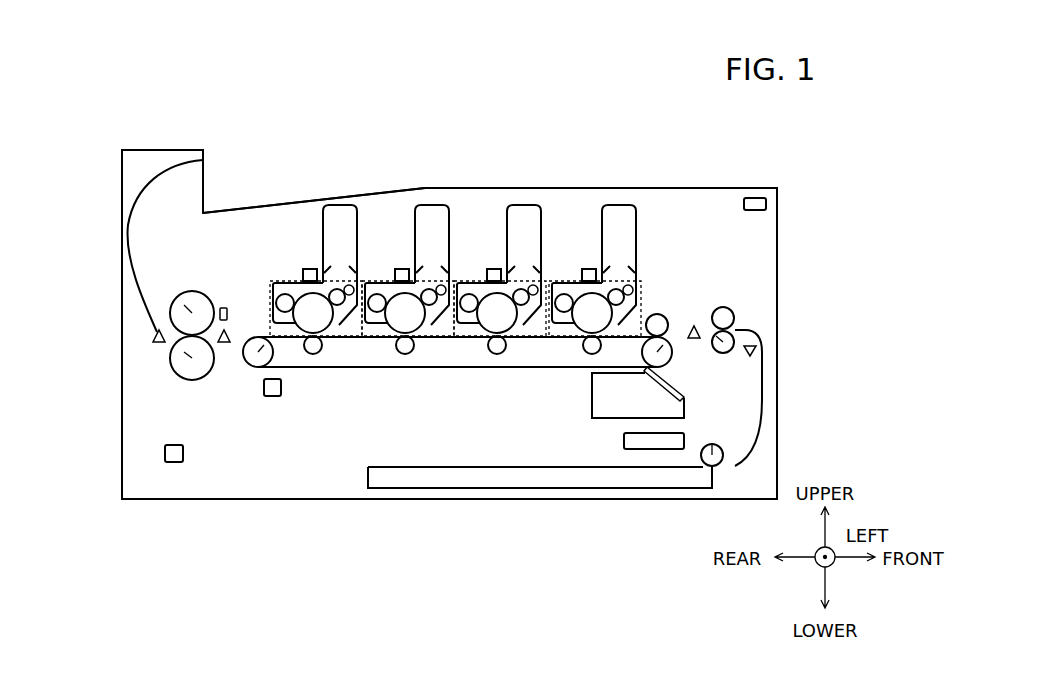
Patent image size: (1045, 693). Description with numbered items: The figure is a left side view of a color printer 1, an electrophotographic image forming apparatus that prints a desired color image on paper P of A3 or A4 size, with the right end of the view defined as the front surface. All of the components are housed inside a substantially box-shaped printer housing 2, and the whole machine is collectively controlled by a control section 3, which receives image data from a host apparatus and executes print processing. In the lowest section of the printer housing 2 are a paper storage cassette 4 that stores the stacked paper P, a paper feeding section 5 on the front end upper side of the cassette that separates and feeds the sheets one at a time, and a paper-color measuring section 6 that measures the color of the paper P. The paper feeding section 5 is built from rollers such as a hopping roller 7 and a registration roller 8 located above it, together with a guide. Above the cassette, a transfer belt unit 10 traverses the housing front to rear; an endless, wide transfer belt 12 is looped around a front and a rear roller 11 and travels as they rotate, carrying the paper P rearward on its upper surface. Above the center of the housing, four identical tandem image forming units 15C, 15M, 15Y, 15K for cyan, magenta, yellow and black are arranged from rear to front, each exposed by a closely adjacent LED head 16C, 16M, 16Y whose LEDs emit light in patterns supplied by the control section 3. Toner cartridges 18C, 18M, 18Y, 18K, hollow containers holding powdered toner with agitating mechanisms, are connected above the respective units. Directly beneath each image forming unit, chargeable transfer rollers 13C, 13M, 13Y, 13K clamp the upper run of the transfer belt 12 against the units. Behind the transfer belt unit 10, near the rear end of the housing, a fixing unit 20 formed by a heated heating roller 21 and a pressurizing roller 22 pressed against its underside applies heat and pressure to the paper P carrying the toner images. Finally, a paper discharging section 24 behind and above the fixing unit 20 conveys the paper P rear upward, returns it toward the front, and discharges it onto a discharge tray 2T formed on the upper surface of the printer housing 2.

The color printer 1 is at (33, 70).
The printer housing 2 is at (150, 499).
The discharge tray 2T is at (245, 194).
The control section 3 is at (165, 453).
The paper storage cassette 4 is at (622, 418).
The paper feeding section 5 is at (776, 432).
The paper-color measuring section 6 is at (657, 441).
The hopping roller 7 is at (716, 463).
The registration roller 8 is at (742, 352).
The transfer belt unit 10 is at (371, 420).
The roller 11 is at (257, 356).
The transfer belt 12 is at (462, 368).
The transfer roller 13C is at (312, 352).
The transfer roller 13M is at (417, 442).
The transfer roller 13Y is at (507, 442).
The transfer roller 13K is at (597, 442).
The image forming unit 15C is at (281, 291).
The image forming unit 15M is at (408, 238).
The image forming unit 15Y is at (500, 238).
The image forming unit 15K is at (595, 238).
The LED head 16C is at (310, 268).
The LED head 16M is at (414, 166).
The LED head 16Y is at (502, 177).
The toner cartridge 18C is at (338, 204).
The toner cartridge 18M is at (433, 237).
The toner cartridge 18Y is at (526, 237).
The toner cartridge 18K is at (620, 237).
The fixing unit 20 is at (153, 400).
The heating roller 21 is at (188, 314).
The pressurizing roller 22 is at (188, 360).
The paper discharging section 24 is at (132, 178).
The paper P is at (550, 478).